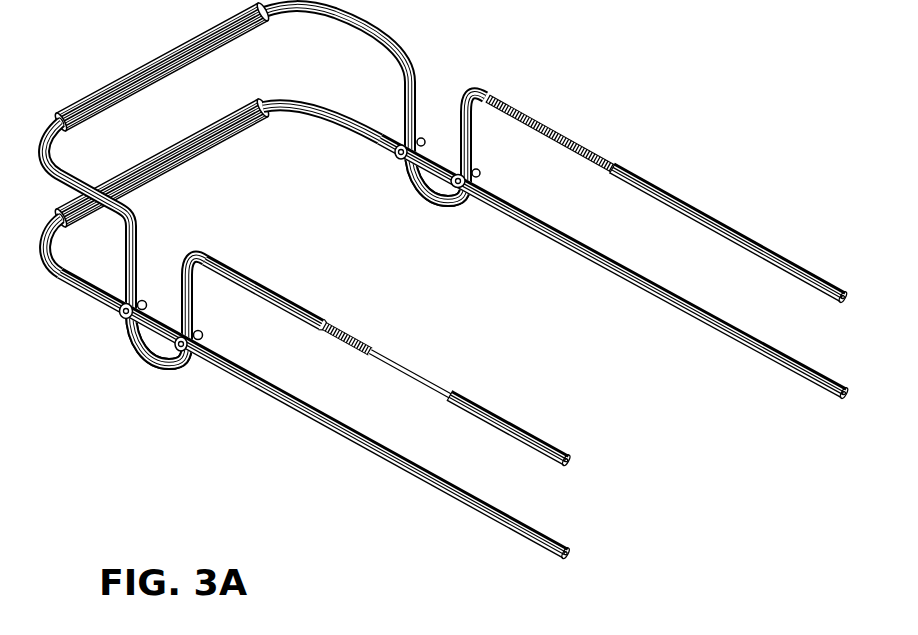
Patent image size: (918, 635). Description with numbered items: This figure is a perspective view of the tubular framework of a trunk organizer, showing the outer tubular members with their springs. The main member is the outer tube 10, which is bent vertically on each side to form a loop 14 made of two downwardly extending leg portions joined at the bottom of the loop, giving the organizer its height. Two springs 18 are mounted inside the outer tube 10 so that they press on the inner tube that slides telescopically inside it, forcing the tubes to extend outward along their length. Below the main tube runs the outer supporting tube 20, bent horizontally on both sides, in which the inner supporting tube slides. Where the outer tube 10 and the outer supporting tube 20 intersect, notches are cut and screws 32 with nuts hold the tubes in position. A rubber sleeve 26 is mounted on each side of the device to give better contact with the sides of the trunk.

The outer tube 10 is at (718, 221).
The loops 14 is at (144, 353).
The springs 18 is at (550, 120).
The outer supporting tube 20 is at (340, 425).
The rubber sleeve 26 is at (180, 47).
The screws 32 is at (118, 316).